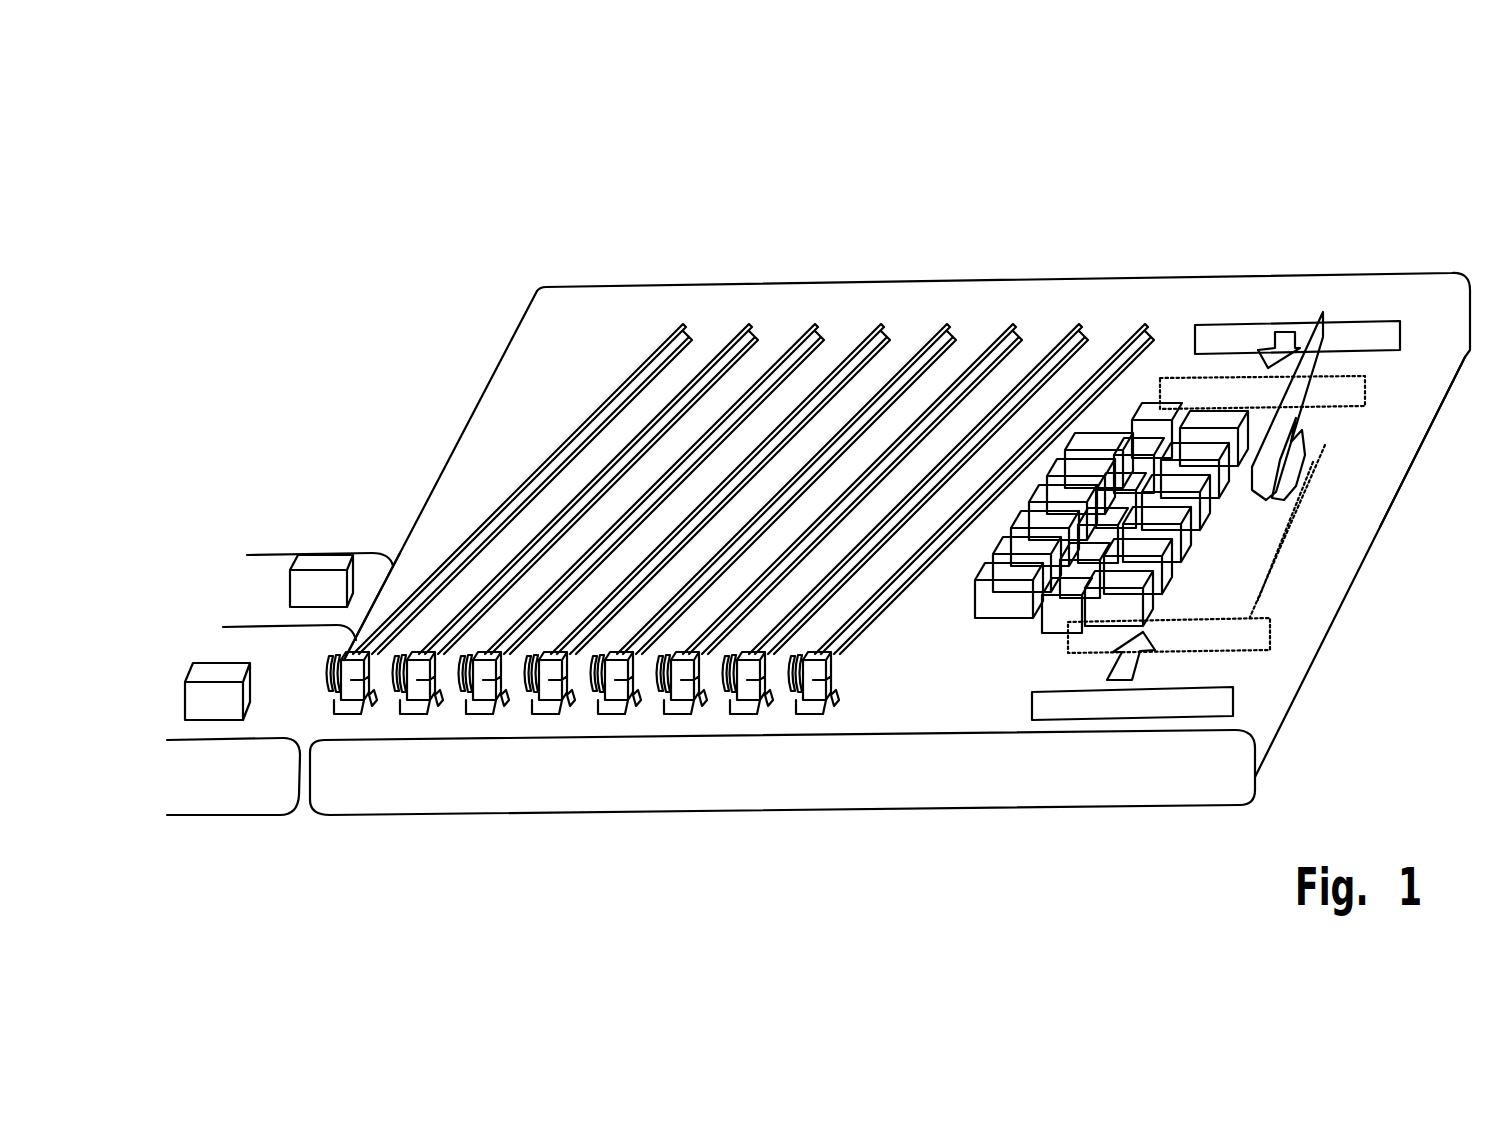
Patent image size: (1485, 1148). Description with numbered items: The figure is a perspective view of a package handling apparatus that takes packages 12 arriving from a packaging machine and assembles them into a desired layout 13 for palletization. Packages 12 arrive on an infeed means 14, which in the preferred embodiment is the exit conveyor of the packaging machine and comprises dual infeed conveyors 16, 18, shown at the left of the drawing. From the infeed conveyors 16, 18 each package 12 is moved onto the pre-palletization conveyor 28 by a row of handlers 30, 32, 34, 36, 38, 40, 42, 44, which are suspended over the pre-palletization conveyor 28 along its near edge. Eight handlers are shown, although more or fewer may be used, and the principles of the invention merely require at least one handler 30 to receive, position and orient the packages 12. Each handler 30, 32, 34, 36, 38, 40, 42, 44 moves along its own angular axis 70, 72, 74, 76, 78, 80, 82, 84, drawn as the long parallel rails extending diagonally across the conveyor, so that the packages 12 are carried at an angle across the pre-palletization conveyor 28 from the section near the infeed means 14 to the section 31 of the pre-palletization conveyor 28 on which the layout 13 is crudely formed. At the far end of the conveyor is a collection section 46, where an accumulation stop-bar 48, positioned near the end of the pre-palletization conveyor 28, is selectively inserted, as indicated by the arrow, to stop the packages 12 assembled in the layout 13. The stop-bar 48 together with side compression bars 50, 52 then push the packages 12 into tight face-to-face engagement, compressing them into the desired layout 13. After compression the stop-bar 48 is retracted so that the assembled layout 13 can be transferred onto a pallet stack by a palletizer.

The package 12 is at (228, 665).
The layout 13 is at (975, 635).
The infeed means 14 is at (270, 821).
The infeed conveyor 16 is at (205, 777).
The infeed conveyor 18 is at (247, 558).
The pre-palletization conveyor 28 is at (465, 510).
The handler 30 is at (350, 683).
The section of the pre-palletization conveyor 31 is at (1132, 387).
The handler 32 is at (416, 683).
The handler 34 is at (482, 683).
The handler 36 is at (548, 683).
The handler 38 is at (614, 683).
The handler 40 is at (680, 683).
The handler 42 is at (746, 683).
The handler 44 is at (812, 683).
The collection section 46 is at (1250, 304).
The accumulation stop-bar 48 is at (1297, 385).
The side compression bar 50 is at (1125, 707).
The side compression bar 52 is at (1250, 340).
The angular axis 70 is at (550, 470).
The angular axis 72 is at (610, 470).
The angular axis 74 is at (685, 455).
The angular axis 76 is at (745, 470).
The angular axis 78 is at (800, 478).
The angular axis 80 is at (880, 470).
The angular axis 82 is at (940, 470).
The angular axis 84 is at (1050, 432).